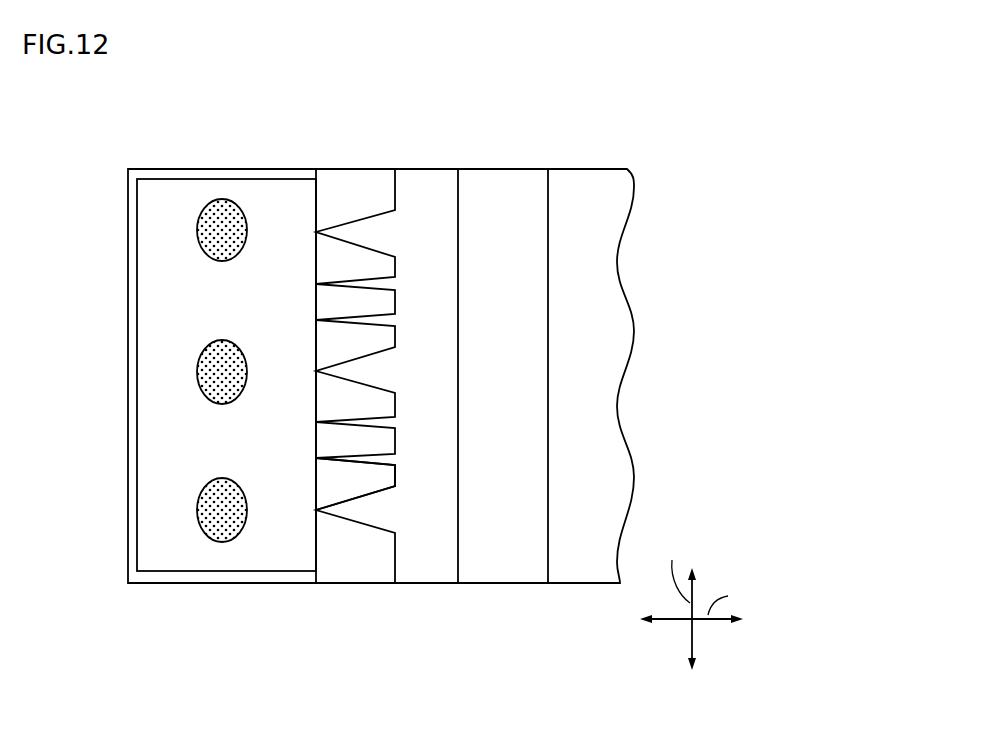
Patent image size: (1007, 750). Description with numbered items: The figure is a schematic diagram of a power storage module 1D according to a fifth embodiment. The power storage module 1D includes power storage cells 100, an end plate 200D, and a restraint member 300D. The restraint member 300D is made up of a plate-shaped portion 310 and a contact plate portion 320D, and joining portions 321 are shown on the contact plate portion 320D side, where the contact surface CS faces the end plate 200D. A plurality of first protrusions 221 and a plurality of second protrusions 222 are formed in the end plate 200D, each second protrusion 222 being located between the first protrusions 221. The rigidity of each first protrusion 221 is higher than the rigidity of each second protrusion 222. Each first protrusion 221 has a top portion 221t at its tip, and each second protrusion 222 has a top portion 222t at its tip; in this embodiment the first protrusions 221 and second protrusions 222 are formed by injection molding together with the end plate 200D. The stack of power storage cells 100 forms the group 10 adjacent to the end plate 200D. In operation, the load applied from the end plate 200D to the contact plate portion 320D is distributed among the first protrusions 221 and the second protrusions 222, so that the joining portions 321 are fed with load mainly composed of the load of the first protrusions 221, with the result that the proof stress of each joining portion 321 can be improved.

The power storage module 1D is at (124, 134).
The restraint member 300D is at (288, 110).
The plate-shaped portion 310 is at (198, 174).
The contact plate portion 320D is at (262, 192).
The joining portion 321 is at (220, 520).
The contact surface CS is at (316, 162).
The end plate 200D is at (427, 193).
The second protrusion 222 is at (373, 458).
The first protrusion 221 is at (360, 510).
The top portion 222t is at (315, 459).
The top portion 221t is at (315, 512).
The display panel 10 is at (487, 110).
The power storage cell 100 is at (505, 193).